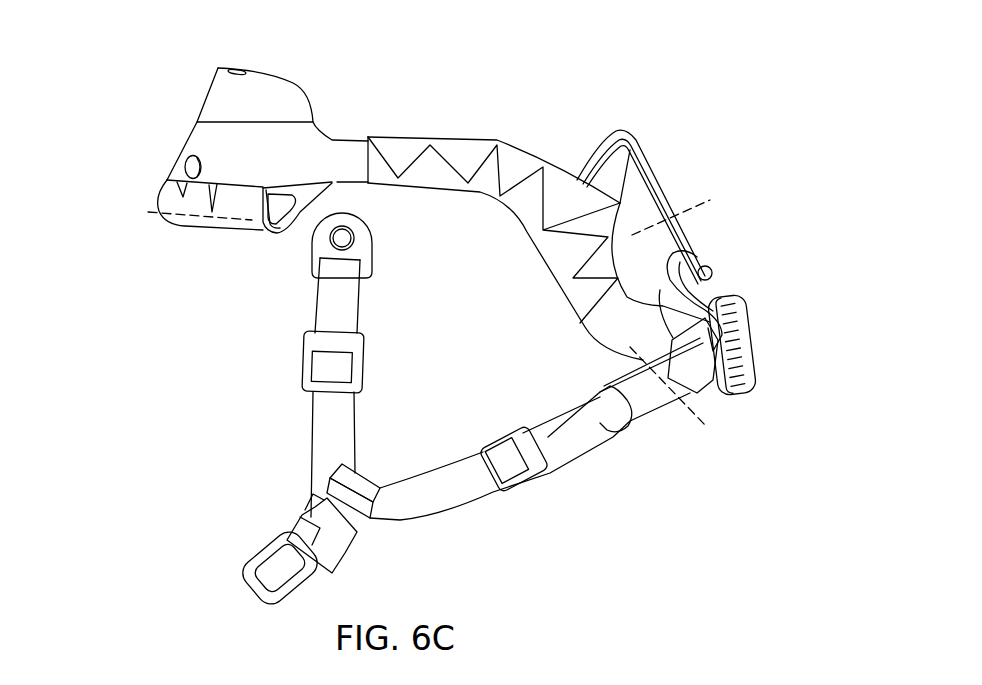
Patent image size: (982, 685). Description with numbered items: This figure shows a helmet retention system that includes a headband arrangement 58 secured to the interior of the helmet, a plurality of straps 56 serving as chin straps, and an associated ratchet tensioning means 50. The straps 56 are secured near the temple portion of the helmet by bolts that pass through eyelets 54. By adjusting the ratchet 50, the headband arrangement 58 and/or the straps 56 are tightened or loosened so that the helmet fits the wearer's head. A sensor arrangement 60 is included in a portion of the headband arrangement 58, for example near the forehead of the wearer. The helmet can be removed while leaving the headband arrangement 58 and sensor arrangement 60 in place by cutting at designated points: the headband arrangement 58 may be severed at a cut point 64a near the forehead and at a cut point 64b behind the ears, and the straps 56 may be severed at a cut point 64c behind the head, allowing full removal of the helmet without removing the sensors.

The ratchet tensioning means 50 is at (745, 352).
The eyelet 54 is at (355, 250).
The straps 56 is at (330, 413).
The headband arrangement 58 is at (432, 165).
The sensor arrangement 60 is at (207, 112).
The cut point 64a is at (199, 217).
The cut point 64b is at (677, 213).
The cut point 64c is at (633, 347).